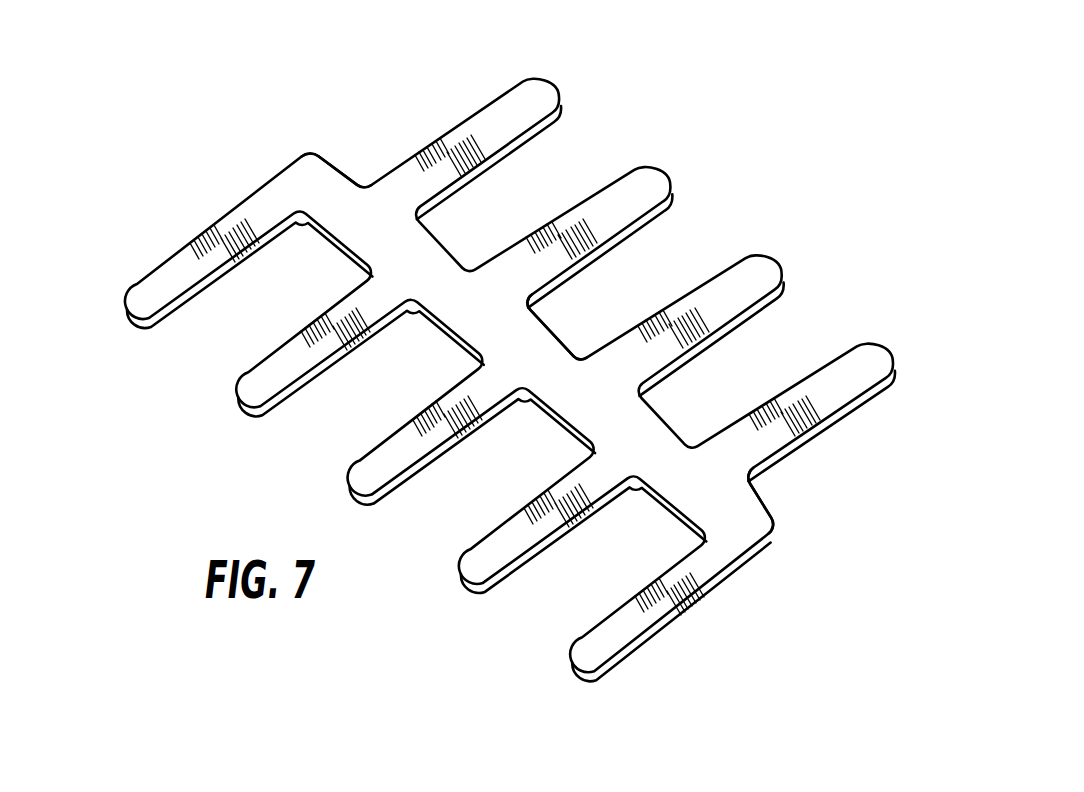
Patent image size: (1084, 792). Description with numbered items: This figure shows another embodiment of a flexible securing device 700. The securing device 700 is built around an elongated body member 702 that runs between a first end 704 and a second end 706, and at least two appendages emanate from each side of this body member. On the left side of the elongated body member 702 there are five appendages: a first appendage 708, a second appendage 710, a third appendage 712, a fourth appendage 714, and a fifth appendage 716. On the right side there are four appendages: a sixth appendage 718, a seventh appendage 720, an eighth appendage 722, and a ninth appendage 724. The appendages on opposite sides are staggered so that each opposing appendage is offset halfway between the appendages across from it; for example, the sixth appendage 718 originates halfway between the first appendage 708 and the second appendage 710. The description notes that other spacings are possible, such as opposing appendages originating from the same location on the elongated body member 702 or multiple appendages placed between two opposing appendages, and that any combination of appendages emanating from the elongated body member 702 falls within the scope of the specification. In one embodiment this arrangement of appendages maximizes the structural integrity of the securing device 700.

The securing device 700 is at (728, 82).
The elongated body member 702 is at (532, 353).
The first end 704 is at (325, 185).
The second end 706 is at (750, 532).
The first appendage 708 is at (145, 302).
The second appendage 710 is at (265, 387).
The third appendage 712 is at (375, 476).
The fourth appendage 714 is at (477, 562).
The fifth appendage 716 is at (585, 653).
The sixth appendage 718 is at (532, 98).
The seventh appendage 720 is at (637, 183).
The eighth appendage 722 is at (747, 271).
The ninth appendage 724 is at (853, 363).